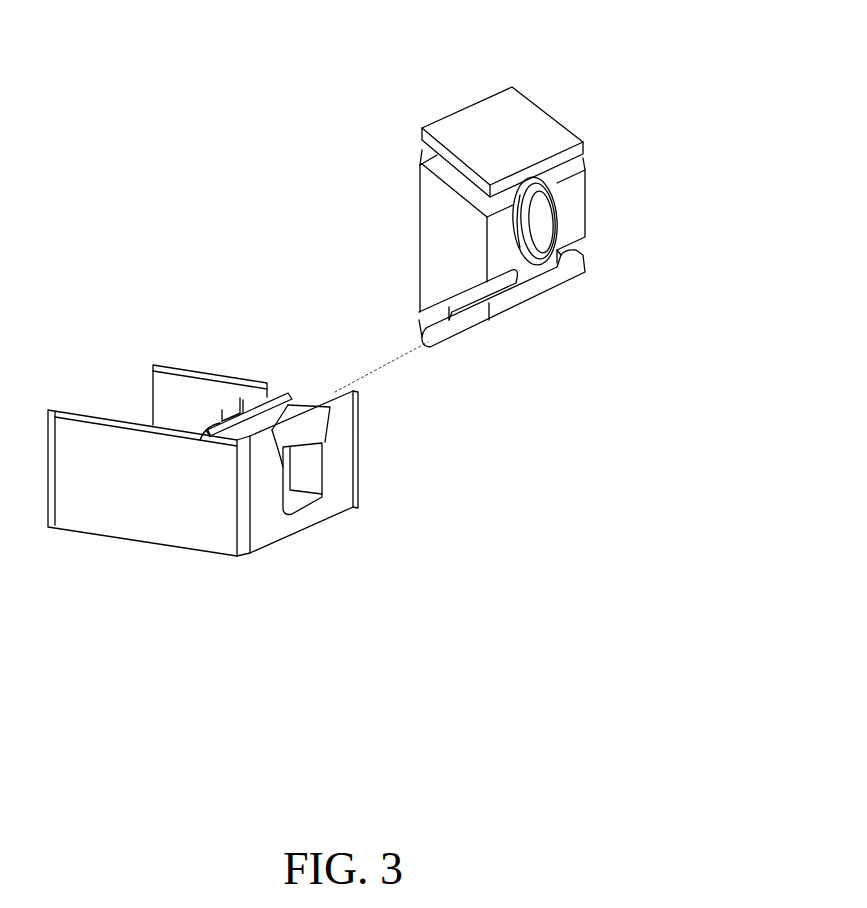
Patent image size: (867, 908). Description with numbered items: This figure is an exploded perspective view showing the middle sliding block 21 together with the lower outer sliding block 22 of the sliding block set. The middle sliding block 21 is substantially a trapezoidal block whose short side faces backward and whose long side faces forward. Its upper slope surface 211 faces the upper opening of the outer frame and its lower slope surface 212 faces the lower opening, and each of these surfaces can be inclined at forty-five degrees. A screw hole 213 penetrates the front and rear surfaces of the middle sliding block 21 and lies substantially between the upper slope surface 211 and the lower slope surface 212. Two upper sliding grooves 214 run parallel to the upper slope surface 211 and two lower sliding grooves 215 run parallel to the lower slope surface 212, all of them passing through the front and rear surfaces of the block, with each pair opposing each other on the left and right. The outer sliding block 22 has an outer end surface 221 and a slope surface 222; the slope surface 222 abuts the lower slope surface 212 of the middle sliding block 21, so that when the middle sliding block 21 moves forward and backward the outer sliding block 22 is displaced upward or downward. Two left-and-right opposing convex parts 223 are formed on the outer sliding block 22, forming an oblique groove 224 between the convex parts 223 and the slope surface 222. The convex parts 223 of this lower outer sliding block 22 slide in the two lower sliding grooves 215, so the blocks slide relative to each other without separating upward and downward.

The middle sliding block 21 is at (430, 243).
The upper slope surface 211 is at (482, 128).
The lower slope surface 212 is at (528, 300).
The screw hole 213 is at (562, 212).
The upper sliding groove 214 is at (445, 181).
The lower sliding groove 215 is at (422, 317).
The outer sliding block 22 is at (127, 518).
The outer end surface 221 is at (293, 535).
The slope surface 222 is at (330, 428).
The convex part 223 is at (185, 424).
The oblique groove 224 is at (288, 395).